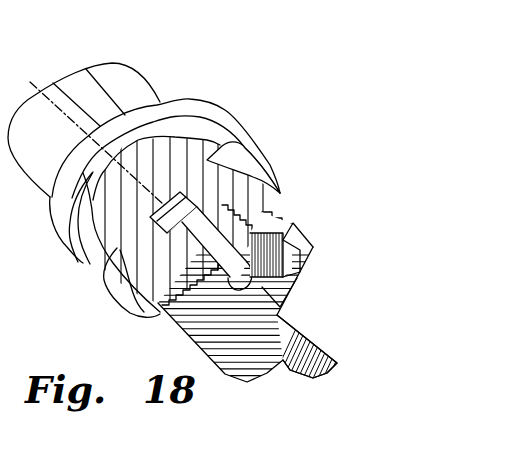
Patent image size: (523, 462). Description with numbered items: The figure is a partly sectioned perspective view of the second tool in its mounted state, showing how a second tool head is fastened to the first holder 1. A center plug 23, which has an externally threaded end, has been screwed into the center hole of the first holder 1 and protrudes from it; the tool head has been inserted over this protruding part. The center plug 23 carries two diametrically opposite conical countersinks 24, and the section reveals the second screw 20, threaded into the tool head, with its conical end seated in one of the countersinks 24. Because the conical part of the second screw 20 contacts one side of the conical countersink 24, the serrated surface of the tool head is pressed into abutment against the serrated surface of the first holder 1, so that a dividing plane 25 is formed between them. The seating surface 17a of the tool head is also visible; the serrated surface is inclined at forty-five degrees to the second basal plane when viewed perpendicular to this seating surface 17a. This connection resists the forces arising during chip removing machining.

The first holder 1 is at (222, 93).
The seating surface 17a is at (303, 364).
The second screw 20 is at (293, 243).
The center plug 23 is at (212, 256).
The conical countersinks 24 is at (200, 265).
The dividing plane 25 is at (245, 208).